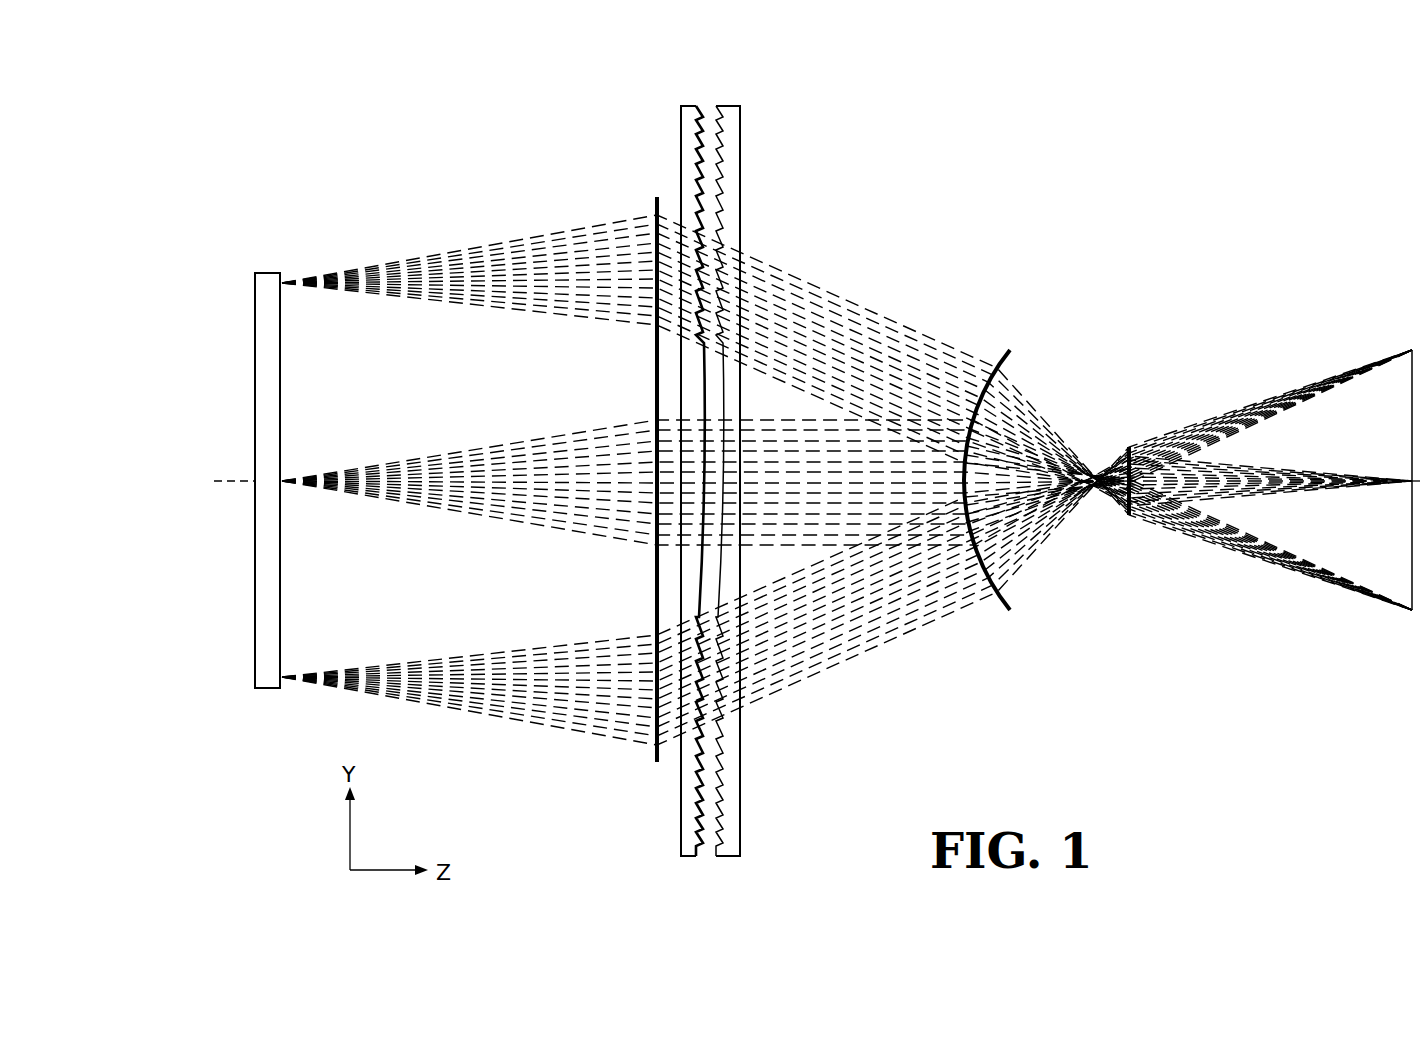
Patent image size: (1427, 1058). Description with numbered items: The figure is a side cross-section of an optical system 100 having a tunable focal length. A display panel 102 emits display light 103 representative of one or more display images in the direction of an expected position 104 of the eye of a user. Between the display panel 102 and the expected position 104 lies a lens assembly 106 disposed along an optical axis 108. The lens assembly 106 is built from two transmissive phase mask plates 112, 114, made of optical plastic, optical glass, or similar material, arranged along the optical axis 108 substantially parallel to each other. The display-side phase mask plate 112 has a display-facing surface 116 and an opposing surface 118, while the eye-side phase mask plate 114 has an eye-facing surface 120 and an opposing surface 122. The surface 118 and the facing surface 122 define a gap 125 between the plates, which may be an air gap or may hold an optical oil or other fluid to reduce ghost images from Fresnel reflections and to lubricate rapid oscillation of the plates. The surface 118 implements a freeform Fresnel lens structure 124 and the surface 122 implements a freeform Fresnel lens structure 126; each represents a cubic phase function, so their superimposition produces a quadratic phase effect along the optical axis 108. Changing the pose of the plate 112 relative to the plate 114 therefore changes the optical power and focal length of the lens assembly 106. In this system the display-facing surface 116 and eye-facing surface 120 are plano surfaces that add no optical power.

The optical system 100 is at (196, 672).
The display panel 102 is at (270, 272).
The display light 103 is at (413, 220).
The expected position of an eye 104 is at (1010, 612).
The lens assembly 106 is at (709, 477).
The optical axis 108 is at (236, 480).
The display-side phase mask plate 112 is at (652, 519).
The eye-side phase mask plate 114 is at (767, 519).
The display-facing surface 116 is at (683, 826).
The opposing surface of display-side phase mask plate 118 is at (697, 773).
The eye-facing surface 120 is at (740, 826).
The opposing surface of eye-side phase mask plate 122 is at (723, 757).
The freeform Fresnel lens structure 124 is at (688, 142).
The gap 125 is at (707, 96).
The freeform Fresnel lens structure 126 is at (738, 150).